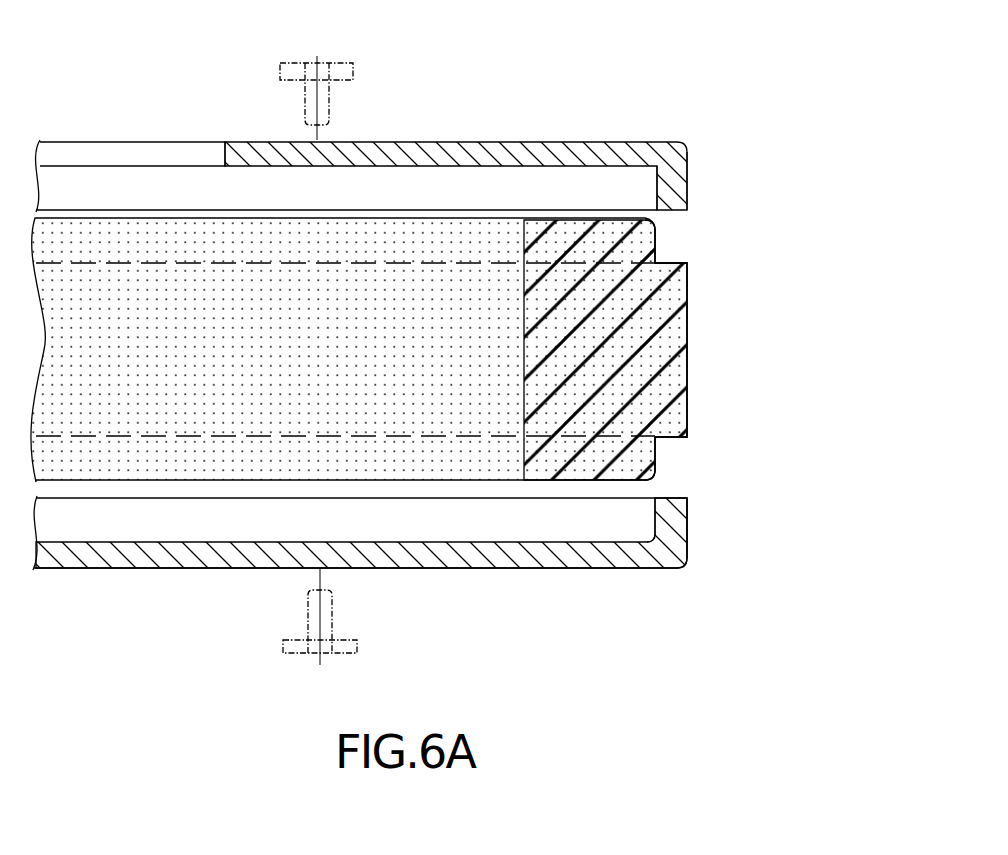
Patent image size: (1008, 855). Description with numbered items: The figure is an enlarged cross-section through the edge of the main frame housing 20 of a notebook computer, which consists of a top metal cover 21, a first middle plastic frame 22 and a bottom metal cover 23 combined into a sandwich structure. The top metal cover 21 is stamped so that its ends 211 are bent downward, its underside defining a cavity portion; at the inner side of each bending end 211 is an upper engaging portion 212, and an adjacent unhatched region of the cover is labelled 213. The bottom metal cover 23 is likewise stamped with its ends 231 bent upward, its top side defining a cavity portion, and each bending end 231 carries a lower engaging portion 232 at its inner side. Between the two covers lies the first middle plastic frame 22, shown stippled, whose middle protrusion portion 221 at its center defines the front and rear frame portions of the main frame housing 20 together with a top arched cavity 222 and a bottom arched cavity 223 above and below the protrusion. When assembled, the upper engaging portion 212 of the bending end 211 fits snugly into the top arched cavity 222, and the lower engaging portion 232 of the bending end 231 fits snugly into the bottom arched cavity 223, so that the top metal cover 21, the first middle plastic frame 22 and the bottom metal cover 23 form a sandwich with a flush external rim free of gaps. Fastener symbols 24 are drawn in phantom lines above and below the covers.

The main frame housing 20 is at (457, 336).
The top metal cover 21 is at (414, 123).
The bending ends 211 is at (688, 172).
The upper engaging portion 212 is at (641, 168).
The upper plate end portion 213 is at (120, 155).
The first middle plastic frame 22 is at (423, 271).
The middle protrusion portion 221 is at (690, 333).
The top arched cavity 222 is at (660, 242).
The bottom arched cavity 223 is at (660, 452).
The bottom metal cover 23 is at (418, 566).
The bending ends 231 is at (690, 537).
The lower engaging portion 232 is at (698, 562).
The bolt 24 is at (340, 63).